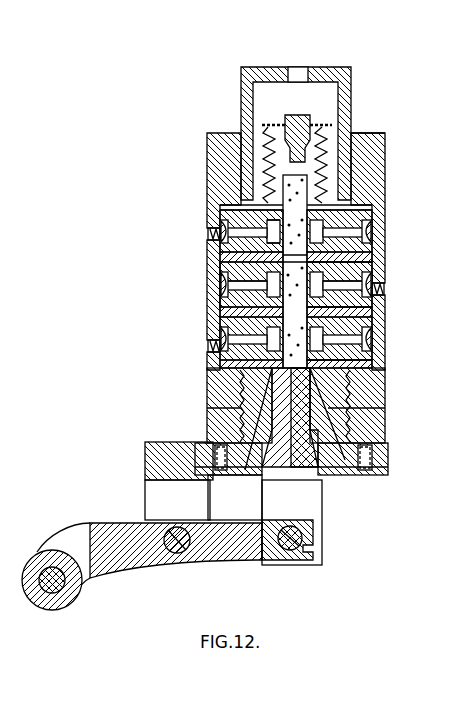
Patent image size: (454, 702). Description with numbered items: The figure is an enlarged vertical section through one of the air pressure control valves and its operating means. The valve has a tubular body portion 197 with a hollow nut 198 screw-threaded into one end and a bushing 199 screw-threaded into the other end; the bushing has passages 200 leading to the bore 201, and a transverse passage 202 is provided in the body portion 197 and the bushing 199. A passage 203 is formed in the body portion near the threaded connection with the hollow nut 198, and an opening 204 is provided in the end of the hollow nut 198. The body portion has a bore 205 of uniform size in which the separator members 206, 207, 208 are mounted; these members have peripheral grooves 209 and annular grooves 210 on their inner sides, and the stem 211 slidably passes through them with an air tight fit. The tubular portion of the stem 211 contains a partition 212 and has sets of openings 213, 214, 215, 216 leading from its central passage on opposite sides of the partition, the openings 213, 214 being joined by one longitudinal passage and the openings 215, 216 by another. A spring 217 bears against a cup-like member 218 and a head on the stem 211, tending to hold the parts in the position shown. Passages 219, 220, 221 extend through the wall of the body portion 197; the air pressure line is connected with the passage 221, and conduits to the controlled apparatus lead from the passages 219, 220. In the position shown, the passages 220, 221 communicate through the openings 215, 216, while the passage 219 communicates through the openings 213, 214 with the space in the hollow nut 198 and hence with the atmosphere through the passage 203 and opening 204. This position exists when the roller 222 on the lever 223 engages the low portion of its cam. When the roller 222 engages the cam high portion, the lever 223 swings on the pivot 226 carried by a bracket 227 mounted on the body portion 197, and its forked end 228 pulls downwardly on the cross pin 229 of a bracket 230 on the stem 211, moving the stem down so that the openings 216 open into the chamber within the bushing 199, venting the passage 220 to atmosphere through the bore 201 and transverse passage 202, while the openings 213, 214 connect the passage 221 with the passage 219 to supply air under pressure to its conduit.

The tubular body portion 197 is at (376, 256).
The hollow nut 198 is at (345, 112).
The bushing 199 is at (345, 390).
The passages 200 is at (228, 412).
The bore 201 is at (235, 392).
The transverse passage 202 is at (380, 408).
The passage 203 is at (374, 206).
The opening 204 is at (298, 78).
The bore 205 is at (222, 300).
The separator member 206 is at (374, 218).
The separator member 207 is at (245, 280).
The separator member 208 is at (360, 323).
The peripheral grooves 209 is at (222, 222).
The annular grooves 210 is at (232, 268).
The stem 211 is at (279, 130).
The partition 212 is at (262, 256).
The openings 213 is at (335, 160).
The openings 214 is at (312, 192).
The openings 215 is at (372, 303).
The openings 216 is at (370, 366).
The spring 217 is at (325, 128).
The cup-like member 218 is at (372, 135).
The passage 219 is at (208, 234).
The passage 220 is at (208, 346).
The passage 221 is at (385, 290).
The roller 222 is at (68, 604).
The lever 223 is at (95, 527).
The pivot 226 is at (185, 553).
The bracket 227 is at (162, 497).
The forked end 228 is at (318, 556).
The cross pin 229 is at (291, 550).
The bracket 230 is at (324, 508).